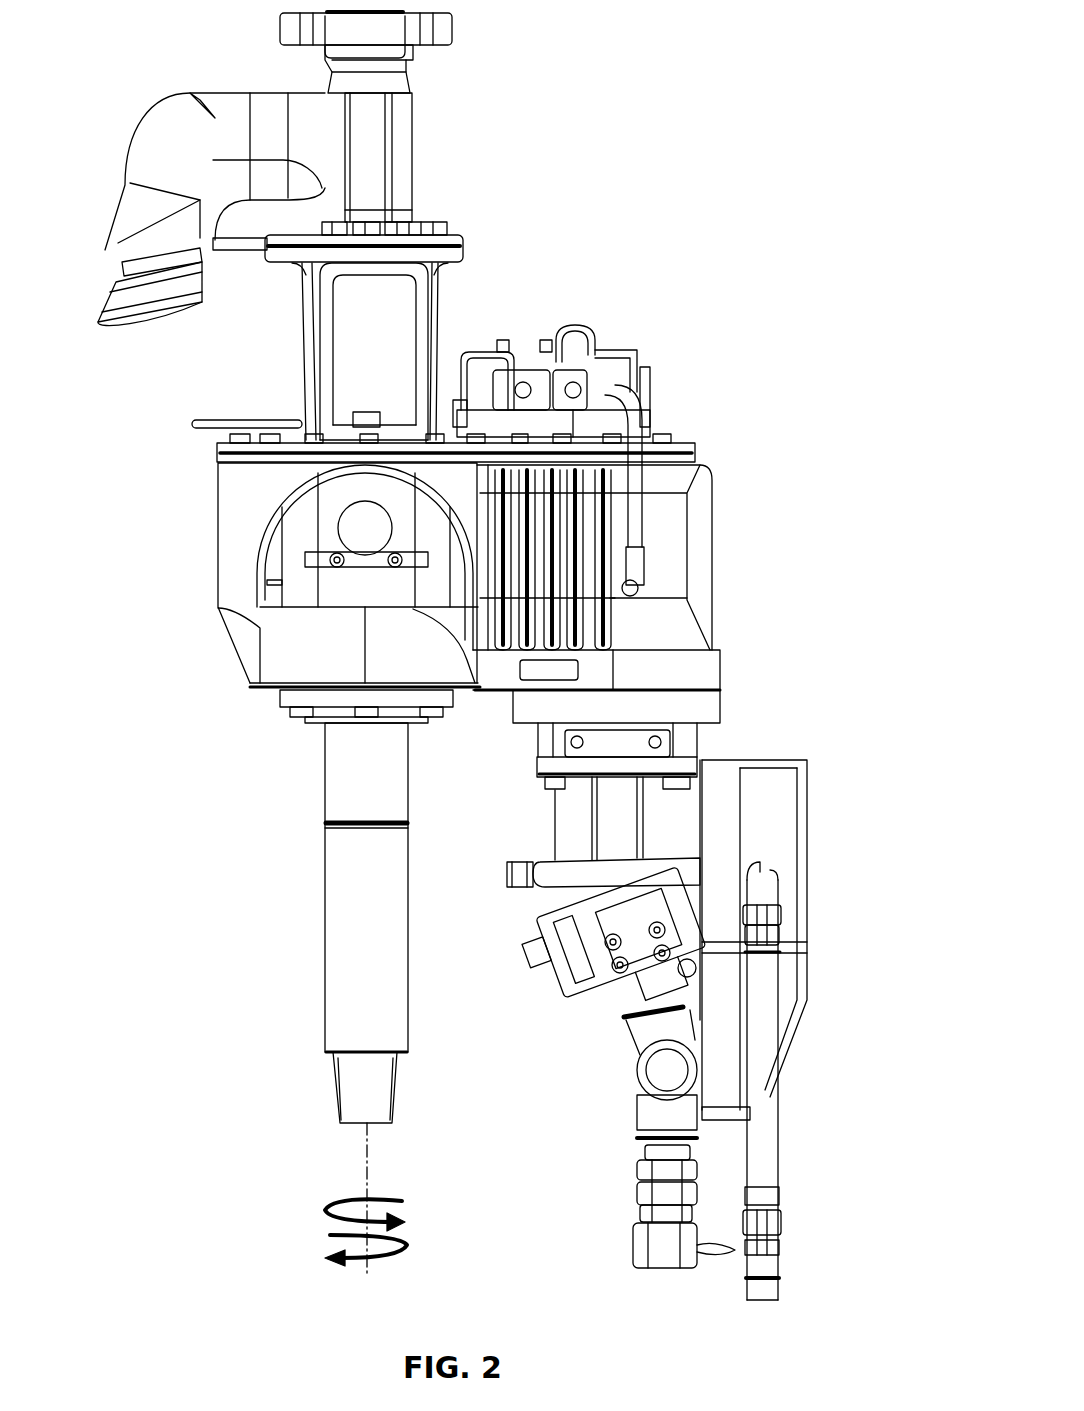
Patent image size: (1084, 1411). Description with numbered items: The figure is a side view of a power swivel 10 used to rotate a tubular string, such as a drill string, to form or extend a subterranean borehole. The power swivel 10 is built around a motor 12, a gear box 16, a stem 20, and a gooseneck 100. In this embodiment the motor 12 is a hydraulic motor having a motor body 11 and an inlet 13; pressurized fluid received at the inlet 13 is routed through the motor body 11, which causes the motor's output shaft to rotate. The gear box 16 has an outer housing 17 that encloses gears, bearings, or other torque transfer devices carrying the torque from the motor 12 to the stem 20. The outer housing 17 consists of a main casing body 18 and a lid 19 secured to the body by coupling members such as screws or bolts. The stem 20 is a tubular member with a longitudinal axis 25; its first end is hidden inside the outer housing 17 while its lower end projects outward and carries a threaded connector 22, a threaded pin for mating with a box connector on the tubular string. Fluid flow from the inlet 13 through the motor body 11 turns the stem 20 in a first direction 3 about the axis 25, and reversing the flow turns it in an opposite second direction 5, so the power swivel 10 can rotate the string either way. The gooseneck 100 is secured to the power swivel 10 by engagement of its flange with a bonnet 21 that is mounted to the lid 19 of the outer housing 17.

The power swivel 10 is at (612, 176).
The gooseneck 100 is at (400, 145).
The bonnet 21 is at (462, 252).
The lid 19 is at (217, 452).
The outer housing 17 is at (216, 514).
The gear box 16 is at (181, 588).
The main casing body 18 is at (670, 562).
The stem 20 is at (345, 977).
The threaded connector 22 is at (350, 1078).
The longitudinal axis 25 is at (365, 1163).
The first direction 3 is at (330, 1211).
The second direction 5 is at (405, 1244).
The motor 12 is at (823, 841).
The motor body 11 is at (588, 912).
The inlet 13 is at (634, 1246).